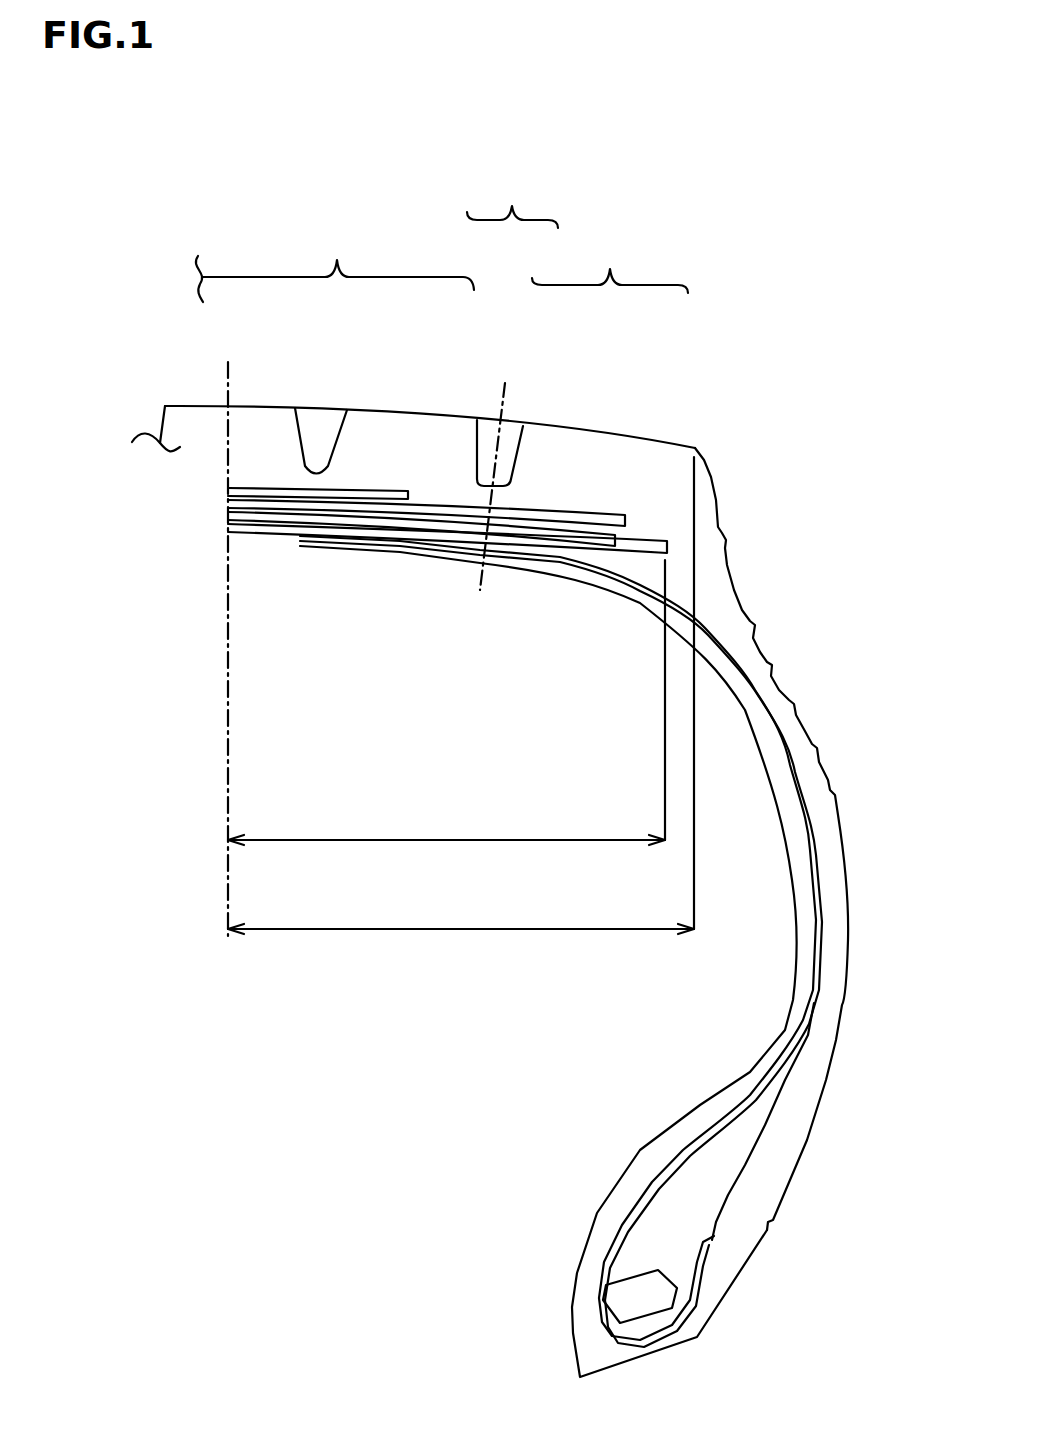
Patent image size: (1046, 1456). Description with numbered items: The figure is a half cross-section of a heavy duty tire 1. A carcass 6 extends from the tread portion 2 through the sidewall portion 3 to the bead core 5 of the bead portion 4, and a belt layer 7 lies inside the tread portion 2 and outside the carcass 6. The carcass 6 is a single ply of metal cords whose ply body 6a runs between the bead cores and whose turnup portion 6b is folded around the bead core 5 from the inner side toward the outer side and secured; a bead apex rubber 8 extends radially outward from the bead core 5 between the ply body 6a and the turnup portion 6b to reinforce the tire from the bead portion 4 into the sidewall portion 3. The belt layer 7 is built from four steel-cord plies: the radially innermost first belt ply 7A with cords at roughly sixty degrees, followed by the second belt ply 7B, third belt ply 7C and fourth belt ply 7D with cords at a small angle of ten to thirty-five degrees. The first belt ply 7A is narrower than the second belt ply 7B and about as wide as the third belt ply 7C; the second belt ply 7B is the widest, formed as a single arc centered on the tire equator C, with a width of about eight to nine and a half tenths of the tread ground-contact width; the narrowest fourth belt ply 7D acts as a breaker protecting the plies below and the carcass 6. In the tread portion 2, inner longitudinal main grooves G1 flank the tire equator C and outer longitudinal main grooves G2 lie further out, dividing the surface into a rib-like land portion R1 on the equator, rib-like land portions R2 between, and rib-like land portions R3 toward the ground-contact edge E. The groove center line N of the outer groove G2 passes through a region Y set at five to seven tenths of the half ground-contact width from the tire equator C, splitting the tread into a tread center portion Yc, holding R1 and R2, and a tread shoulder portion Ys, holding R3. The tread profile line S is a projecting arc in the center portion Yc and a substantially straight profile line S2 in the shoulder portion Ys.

The heavy duty tire 1 is at (752, 386).
The tread portion 2 is at (675, 438).
The sidewall portion 3 is at (856, 830).
The bead portion 4 is at (553, 1277).
The bead core 5 is at (635, 1313).
The carcass 6 is at (568, 1053).
The ply body 6a is at (722, 1113).
The turnup portion 6b is at (735, 1210).
The belt layer 7 is at (126, 463).
The first belt ply 7A is at (228, 525).
The second belt ply 7B is at (228, 513).
The third belt ply 7C is at (228, 502).
The fourth belt ply 7D is at (228, 491).
The bead apex rubber 8 is at (655, 1232).
The inner rib-like land portion R1 is at (263, 420).
The intermediate rib-like land portion R2 is at (426, 425).
The outer rib-like land portion R3 is at (614, 448).
The tread profile line S is at (376, 410).
The straight profile line S2 is at (638, 437).
The inner longitudinal main groove G1 is at (320, 460).
The outer longitudinal main groove G2 is at (500, 478).
The groove center line N is at (478, 578).
The tire equator C is at (228, 717).
The ground-contact edge E is at (697, 447).
The region Y is at (512, 202).
The tread center portion Yc is at (335, 266).
The tread shoulder portion Ys is at (610, 267).